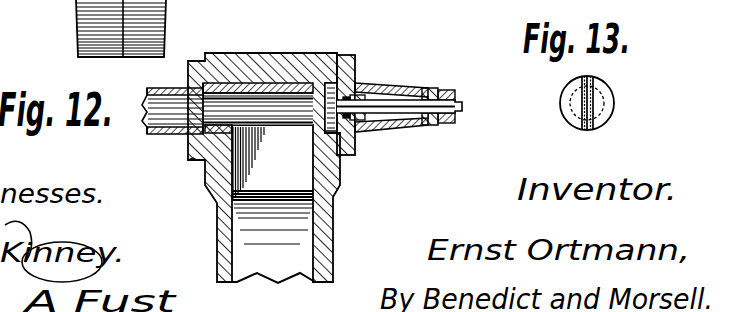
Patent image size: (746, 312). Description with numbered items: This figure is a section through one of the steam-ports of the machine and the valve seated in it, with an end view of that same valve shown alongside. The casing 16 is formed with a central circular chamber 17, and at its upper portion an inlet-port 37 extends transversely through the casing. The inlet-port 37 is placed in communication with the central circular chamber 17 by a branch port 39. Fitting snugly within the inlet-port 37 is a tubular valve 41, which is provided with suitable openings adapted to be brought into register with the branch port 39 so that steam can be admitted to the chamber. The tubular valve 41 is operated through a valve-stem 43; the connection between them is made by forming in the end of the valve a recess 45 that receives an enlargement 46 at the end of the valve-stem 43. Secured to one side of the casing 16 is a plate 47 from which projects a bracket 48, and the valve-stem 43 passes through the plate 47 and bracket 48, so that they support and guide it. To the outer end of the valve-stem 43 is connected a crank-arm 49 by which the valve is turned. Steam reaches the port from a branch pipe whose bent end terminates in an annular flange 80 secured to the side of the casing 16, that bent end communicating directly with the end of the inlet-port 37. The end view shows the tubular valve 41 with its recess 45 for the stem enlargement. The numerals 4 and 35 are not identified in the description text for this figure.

In FIG. 12, the threaded cylinder 4 is at (176, 12).
In FIG. 12, the casing 16 is at (219, 243).
In FIG. 12, the central circular chamber 17 is at (273, 237).
In FIG. 12, the inlet-port 37 is at (258, 110).
In FIG. 12, the branch port 39 is at (265, 163).
In FIG. 12, the tubular valve 41 is at (285, 84).
In FIG. 13, the tubular valve 41 is at (607, 110).
In FIG. 12, the valve-stem 43 is at (462, 104).
In FIG. 12, the recess 45 is at (340, 54).
In FIG. 13, the recess 45 is at (587, 130).
In FIG. 12, the enlargement 46 is at (355, 83).
In FIG. 12, the plate 47 is at (356, 152).
In FIG. 12, the bracket 48 is at (425, 127).
In FIG. 12, the crank-arm 49 is at (447, 90).
In FIG. 12, the annular flange 80 is at (193, 158).
In FIG. 12, the fragment numeral 35 is at (480, 5).